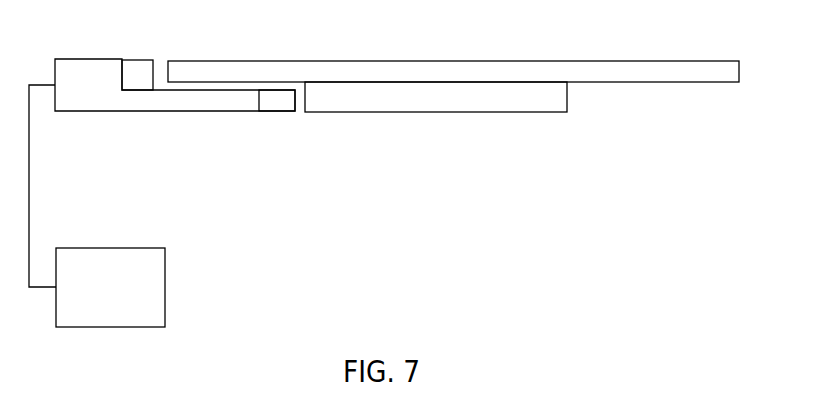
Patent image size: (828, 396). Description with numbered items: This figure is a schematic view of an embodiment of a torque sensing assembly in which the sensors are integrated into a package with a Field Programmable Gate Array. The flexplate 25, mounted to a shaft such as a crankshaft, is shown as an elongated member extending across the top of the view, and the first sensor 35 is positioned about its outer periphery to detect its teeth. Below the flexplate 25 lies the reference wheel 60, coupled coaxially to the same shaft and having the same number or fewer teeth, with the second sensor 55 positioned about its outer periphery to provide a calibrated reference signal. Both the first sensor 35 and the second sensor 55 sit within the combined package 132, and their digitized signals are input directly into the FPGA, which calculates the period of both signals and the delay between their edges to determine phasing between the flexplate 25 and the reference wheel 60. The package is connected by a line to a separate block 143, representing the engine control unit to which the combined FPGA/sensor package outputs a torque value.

The sensor housing / base 132 is at (112, 60).
The first sensor 35 is at (140, 63).
The flexplate 25 is at (212, 60).
The second sensor 55 is at (278, 106).
The reference wheel 60 is at (453, 105).
The controller 143 is at (111, 247).